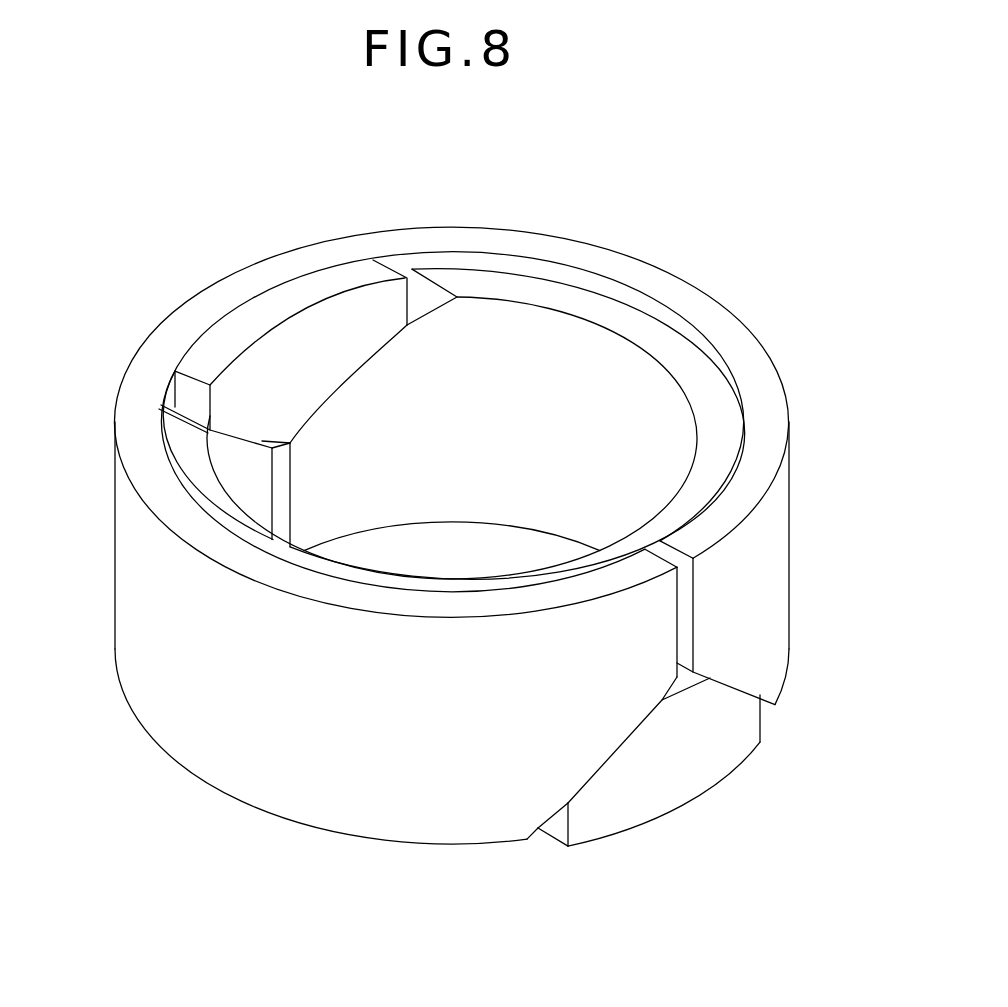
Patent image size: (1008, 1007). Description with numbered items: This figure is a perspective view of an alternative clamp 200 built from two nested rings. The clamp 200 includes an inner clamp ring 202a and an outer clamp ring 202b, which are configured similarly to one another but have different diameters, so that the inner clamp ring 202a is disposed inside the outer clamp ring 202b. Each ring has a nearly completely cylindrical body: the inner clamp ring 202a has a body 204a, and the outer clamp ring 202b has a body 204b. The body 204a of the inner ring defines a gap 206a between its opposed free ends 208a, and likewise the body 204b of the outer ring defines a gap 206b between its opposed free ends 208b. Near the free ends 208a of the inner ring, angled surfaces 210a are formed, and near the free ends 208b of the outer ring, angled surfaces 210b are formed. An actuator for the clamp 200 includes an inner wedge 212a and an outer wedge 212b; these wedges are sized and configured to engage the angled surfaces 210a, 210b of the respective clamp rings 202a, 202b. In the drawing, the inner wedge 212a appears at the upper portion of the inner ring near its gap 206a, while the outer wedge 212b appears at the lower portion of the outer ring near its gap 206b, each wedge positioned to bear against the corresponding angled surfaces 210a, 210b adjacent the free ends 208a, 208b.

The clamp 200 is at (320, 213).
The inner clamp ring 202a is at (563, 300).
The outer clamp ring 202b is at (678, 293).
The body 204a is at (600, 448).
The body 204b is at (306, 711).
The gap 206a is at (281, 485).
The gap 206b is at (682, 620).
The free ends 208a is at (290, 503).
The free ends 208b is at (726, 641).
The angled surfaces 210a is at (377, 353).
The angled surfaces 210b is at (747, 683).
The inner wedge 212a is at (247, 357).
The outer wedge 212b is at (666, 793).